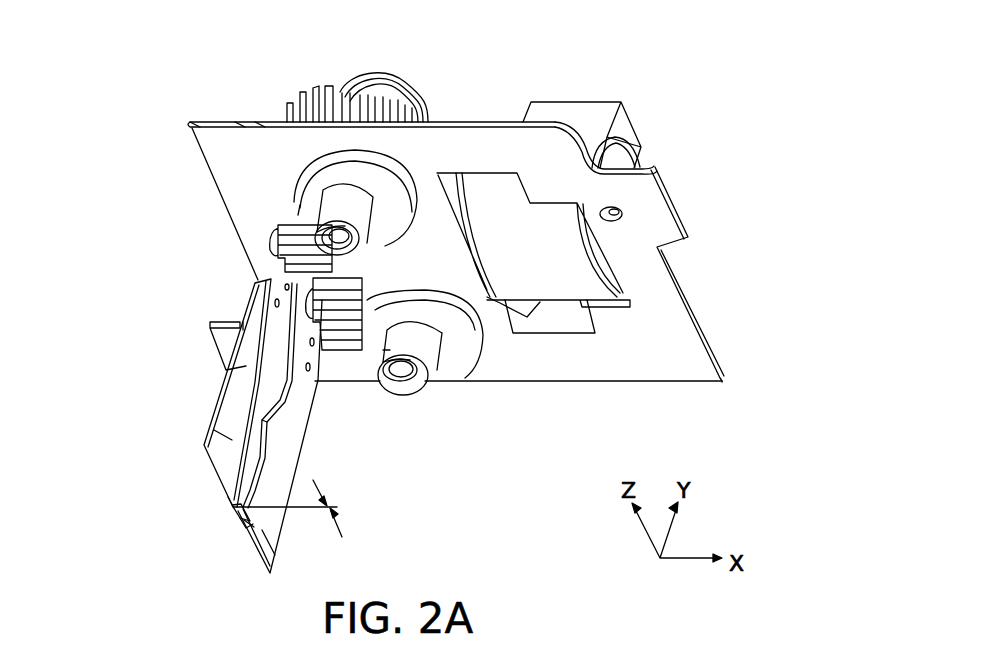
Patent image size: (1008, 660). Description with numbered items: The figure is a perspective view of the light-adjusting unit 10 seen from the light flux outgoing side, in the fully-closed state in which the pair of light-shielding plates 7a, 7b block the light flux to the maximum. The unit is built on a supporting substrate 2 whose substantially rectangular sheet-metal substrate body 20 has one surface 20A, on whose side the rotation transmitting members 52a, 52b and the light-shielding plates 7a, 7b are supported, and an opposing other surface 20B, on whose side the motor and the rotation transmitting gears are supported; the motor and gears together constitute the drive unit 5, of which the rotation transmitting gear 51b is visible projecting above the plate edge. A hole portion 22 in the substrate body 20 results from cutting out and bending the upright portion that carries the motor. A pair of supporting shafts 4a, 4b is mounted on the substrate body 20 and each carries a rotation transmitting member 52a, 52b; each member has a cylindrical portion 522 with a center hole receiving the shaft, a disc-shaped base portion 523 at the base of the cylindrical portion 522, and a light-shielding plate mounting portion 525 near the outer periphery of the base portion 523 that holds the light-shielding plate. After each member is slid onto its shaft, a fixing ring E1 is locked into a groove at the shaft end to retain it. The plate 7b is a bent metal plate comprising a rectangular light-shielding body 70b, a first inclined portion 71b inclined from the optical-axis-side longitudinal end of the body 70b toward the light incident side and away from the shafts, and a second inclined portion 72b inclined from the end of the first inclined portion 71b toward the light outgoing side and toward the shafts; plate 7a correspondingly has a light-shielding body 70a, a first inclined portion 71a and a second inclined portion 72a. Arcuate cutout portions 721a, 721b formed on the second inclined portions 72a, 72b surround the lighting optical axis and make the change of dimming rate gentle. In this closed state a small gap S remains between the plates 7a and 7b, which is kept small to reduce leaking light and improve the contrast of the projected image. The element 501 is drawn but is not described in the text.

The light-adjusting unit 10 is at (666, 75).
The supporting substrate 2 is at (550, 145).
The substrate body 20 is at (212, 140).
The one surface 20A is at (247, 140).
The other surface 20B is at (263, 120).
The hole portion 22 is at (618, 270).
The drive unit 5 is at (446, 82).
The rotation transmitting gear 51b is at (337, 90).
The hook portion 501 is at (617, 155).
The supporting shaft 4b is at (340, 232).
The supporting shaft 4a is at (407, 388).
The rotation transmitting member 52b is at (116, 152).
The rotation transmitting member 52a is at (576, 455).
The base portion 523 is at (310, 160).
The cylindrical portion 522 is at (335, 202).
The light-shielding plate mounting portion 525 is at (293, 240).
The fixing ring E1 is at (345, 250).
The light-shielding plate 7b is at (183, 427).
The light-shielding plate 7a is at (306, 548).
The light-shielding body 70b is at (237, 402).
The light-shielding body 70a is at (273, 540).
The cutout portion 721b is at (242, 362).
The cutout portion 721a is at (277, 437).
The first inclined portion 71b is at (228, 498).
The first inclined portion 71a is at (238, 522).
The second inclined portion 72b is at (233, 512).
The second inclined portion 72a is at (237, 518).
The gap S is at (295, 508).